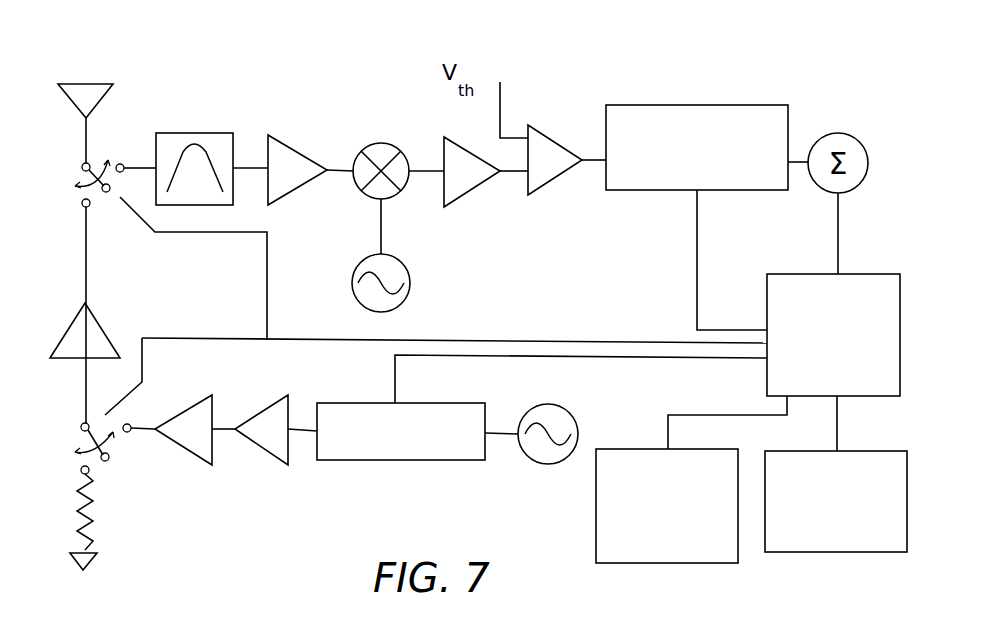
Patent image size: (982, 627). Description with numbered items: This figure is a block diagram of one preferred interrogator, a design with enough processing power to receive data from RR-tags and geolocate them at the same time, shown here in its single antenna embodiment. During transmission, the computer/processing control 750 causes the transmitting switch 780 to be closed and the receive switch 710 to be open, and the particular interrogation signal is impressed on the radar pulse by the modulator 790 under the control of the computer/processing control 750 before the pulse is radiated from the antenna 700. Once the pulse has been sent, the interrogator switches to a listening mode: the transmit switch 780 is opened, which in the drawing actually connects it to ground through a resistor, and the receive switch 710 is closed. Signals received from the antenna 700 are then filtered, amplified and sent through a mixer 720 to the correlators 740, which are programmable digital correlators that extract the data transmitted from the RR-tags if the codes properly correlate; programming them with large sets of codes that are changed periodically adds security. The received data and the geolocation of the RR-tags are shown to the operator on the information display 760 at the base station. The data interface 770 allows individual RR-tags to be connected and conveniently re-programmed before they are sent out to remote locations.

The antenna 700 is at (83, 98).
The receive switch 710 is at (73, 181).
The mixer 720 is at (380, 143).
The correlators 740 is at (787, 129).
The computer/processing control 750 is at (898, 300).
The information display 760 is at (904, 475).
The data interface 770 is at (736, 474).
The transmitting switch 780 is at (83, 428).
The modulator 790 is at (483, 432).